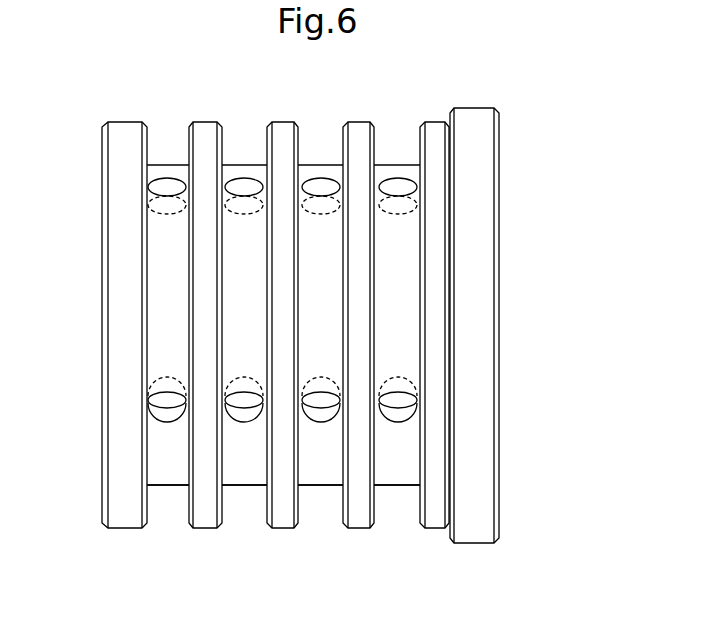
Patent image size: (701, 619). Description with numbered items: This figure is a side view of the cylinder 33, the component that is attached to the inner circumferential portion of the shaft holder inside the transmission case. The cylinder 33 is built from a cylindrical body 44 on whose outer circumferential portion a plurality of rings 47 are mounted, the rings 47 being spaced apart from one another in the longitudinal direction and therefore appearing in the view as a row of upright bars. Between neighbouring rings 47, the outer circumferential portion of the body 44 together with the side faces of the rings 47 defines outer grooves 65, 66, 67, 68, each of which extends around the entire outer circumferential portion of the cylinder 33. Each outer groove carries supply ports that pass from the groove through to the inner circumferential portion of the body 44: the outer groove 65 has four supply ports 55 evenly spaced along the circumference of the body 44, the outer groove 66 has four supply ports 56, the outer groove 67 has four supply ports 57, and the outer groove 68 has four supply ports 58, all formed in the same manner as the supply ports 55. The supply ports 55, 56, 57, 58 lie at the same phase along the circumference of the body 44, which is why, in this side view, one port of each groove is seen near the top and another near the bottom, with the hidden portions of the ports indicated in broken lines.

The cylinder 33 is at (513, 235).
The body 44 is at (169, 272).
The ring 47 is at (128, 130).
The supply port 55 is at (399, 190).
The supply port 56 is at (322, 190).
The supply port 57 is at (245, 190).
The supply port 58 is at (168, 190).
The outer groove 65 is at (396, 502).
The outer groove 66 is at (320, 502).
The outer groove 67 is at (243, 502).
The outer groove 68 is at (167, 502).